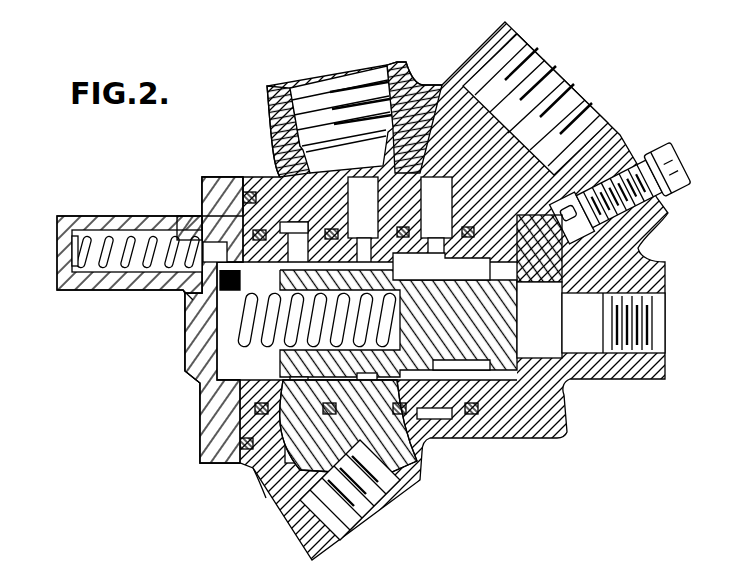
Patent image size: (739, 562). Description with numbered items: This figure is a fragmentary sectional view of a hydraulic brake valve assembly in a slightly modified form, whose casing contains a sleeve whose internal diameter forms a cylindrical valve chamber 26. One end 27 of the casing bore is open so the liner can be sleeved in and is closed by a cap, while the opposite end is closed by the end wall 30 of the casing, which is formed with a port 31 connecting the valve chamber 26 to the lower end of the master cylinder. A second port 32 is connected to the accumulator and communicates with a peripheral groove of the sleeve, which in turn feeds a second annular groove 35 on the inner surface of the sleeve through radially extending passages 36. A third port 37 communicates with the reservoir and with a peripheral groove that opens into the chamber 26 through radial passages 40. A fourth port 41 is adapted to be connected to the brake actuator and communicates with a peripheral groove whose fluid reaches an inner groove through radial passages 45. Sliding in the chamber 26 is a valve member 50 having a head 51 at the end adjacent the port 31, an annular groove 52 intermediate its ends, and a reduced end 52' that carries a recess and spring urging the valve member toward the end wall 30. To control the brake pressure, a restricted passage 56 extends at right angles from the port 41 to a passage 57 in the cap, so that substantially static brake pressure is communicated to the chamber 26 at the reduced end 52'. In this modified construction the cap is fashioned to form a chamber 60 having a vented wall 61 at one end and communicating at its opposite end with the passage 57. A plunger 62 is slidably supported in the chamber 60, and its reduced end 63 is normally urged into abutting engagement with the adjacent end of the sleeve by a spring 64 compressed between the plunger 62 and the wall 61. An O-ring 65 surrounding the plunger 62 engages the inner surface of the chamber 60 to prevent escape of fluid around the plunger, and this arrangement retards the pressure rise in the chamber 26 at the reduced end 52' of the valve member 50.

The valve chamber 26 is at (207, 381).
The end of the bore 27 is at (226, 343).
The end wall of the casing 30 is at (550, 388).
The port 31 is at (633, 331).
The second port 32 is at (380, 515).
The second annular groove 35 is at (485, 206).
The radially extending ports or passages 36 is at (258, 182).
The third port 37 is at (545, 105).
The radial passages 40 is at (433, 235).
The fourth port 41 is at (345, 92).
The radial passages 45 is at (359, 230).
The valve member 50 is at (425, 468).
The head 51 is at (520, 378).
The annular groove 52 is at (441, 311).
The reduced end 52' is at (238, 507).
The restricted passage 56 is at (278, 207).
The passage 57 is at (205, 213).
The chamber 60 is at (107, 283).
The vented wall 61 is at (72, 265).
The plunger 62 is at (178, 222).
The reduced end 63 is at (368, 323).
The spring 64 is at (77, 240).
The O-ring 65 is at (195, 288).